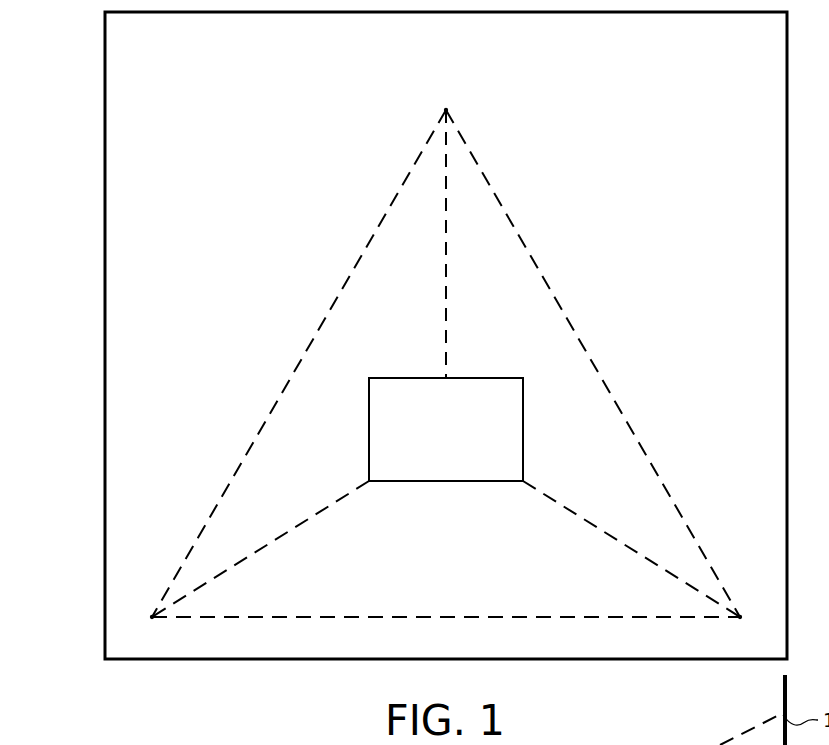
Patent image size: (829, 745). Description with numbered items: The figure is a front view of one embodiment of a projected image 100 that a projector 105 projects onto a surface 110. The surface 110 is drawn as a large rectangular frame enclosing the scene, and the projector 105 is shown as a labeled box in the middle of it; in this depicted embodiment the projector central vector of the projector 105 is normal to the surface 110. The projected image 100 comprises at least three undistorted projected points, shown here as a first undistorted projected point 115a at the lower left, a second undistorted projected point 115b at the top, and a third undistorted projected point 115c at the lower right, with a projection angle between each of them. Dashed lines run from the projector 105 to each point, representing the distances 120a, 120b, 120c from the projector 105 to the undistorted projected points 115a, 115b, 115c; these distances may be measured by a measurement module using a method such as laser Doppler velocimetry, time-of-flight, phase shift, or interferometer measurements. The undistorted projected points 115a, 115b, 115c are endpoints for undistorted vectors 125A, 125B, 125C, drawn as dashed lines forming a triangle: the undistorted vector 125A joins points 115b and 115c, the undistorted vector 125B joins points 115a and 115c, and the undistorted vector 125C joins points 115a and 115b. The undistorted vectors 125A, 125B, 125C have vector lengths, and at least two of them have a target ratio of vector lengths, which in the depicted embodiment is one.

The projected image 100 is at (306, 224).
The projector 105 is at (446, 429).
The surface 110 is at (105, 359).
The undistorted projected point 115a is at (152, 617).
The undistorted projected point 115b is at (446, 110).
The undistorted projected point 115c is at (740, 617).
The distance 120a is at (247, 552).
The distance 120b is at (446, 304).
The distance 120c is at (643, 552).
The undistorted vector 125A is at (566, 312).
The undistorted vector 125B is at (497, 616).
The undistorted vector 125C is at (312, 338).